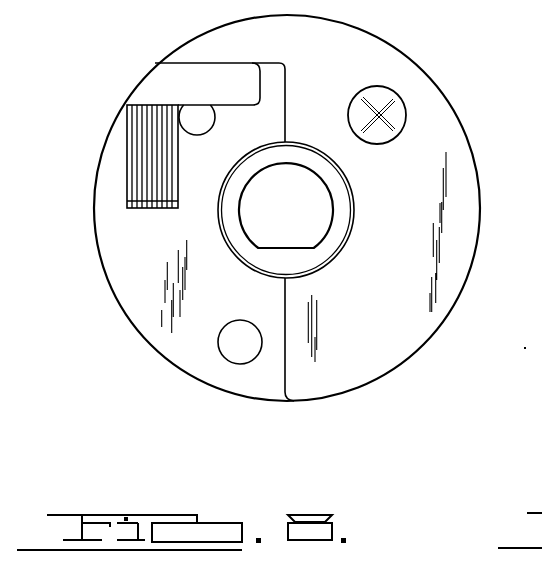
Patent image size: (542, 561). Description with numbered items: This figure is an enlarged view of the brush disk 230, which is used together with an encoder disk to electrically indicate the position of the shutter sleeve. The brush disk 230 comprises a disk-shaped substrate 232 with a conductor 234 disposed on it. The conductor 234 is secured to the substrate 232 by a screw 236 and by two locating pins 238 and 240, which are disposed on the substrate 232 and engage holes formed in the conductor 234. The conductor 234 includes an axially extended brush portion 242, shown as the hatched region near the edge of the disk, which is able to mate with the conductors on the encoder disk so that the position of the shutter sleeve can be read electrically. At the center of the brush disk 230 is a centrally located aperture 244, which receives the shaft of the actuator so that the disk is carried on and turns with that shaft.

The brush disk 230 is at (384, 382).
The disk-shaped substrate 232 is at (463, 188).
The conductor 234 is at (260, 387).
The screw 236 is at (393, 110).
The locating pin 238 is at (230, 345).
The locating pin 240 is at (195, 117).
The brush portion 242 is at (143, 203).
The centrally located aperture 244 is at (312, 220).